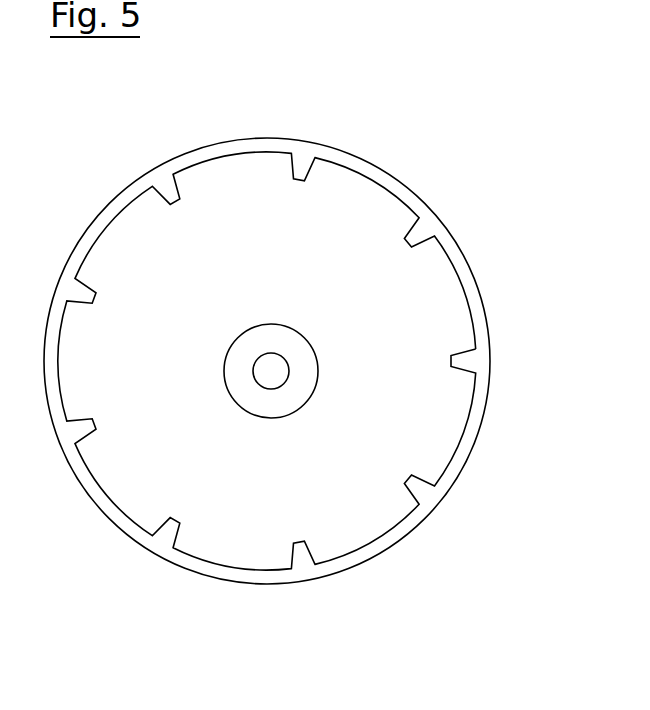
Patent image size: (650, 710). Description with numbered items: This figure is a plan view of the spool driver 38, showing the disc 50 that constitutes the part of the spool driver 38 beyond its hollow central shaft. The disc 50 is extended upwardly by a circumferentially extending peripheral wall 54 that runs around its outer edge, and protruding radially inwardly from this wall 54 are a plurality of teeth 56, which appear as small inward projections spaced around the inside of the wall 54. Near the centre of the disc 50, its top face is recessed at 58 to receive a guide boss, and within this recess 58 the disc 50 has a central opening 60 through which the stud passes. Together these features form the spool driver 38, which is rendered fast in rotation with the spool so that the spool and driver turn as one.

The spool driver 38 is at (381, 147).
The disc 50 is at (358, 237).
The peripheral wall 54 is at (467, 278).
The teeth 56 is at (417, 483).
The recess 58 is at (297, 346).
The central opening 60 is at (283, 382).